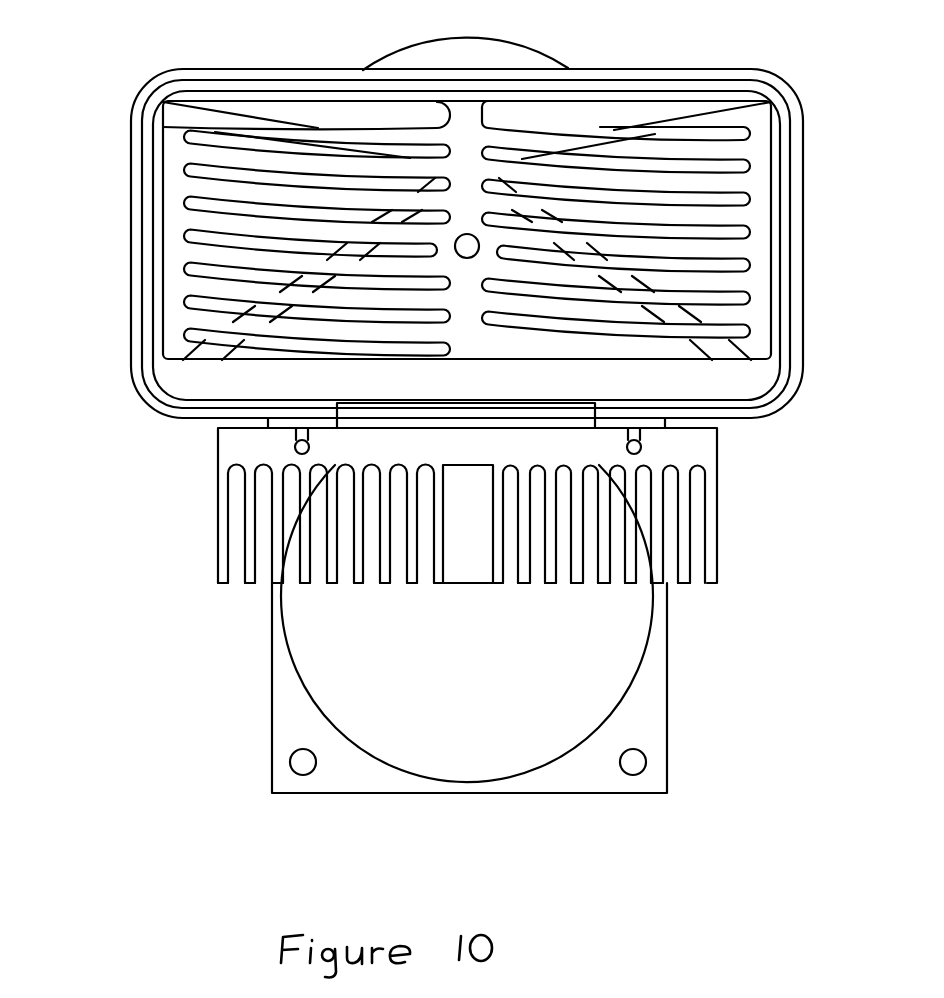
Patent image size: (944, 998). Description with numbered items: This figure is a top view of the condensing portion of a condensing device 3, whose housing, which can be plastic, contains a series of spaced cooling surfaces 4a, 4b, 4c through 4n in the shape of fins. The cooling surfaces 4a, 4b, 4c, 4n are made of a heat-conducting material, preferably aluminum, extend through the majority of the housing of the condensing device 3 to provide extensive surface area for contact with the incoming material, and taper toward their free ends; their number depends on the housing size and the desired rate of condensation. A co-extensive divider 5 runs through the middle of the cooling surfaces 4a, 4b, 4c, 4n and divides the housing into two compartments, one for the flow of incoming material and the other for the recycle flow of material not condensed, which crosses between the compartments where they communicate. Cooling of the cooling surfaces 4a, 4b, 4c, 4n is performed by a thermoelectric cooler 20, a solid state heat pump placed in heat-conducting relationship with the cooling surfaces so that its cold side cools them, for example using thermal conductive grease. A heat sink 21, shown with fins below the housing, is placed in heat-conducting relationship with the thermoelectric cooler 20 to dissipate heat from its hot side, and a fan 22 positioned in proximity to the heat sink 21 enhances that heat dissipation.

The condensing device 3 is at (132, 285).
The cooling surface 4a is at (750, 330).
The cooling surface 4b is at (750, 297).
The cooling surface 4c is at (750, 262).
The cooling surface 4n is at (747, 128).
The divider 5 is at (467, 142).
The thermoelectric cooler 20 is at (475, 424).
The heat sink 21 is at (720, 507).
The fan 22 is at (497, 658).